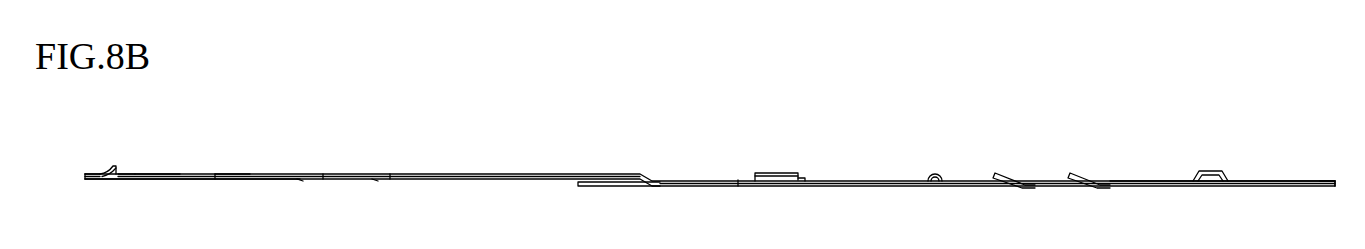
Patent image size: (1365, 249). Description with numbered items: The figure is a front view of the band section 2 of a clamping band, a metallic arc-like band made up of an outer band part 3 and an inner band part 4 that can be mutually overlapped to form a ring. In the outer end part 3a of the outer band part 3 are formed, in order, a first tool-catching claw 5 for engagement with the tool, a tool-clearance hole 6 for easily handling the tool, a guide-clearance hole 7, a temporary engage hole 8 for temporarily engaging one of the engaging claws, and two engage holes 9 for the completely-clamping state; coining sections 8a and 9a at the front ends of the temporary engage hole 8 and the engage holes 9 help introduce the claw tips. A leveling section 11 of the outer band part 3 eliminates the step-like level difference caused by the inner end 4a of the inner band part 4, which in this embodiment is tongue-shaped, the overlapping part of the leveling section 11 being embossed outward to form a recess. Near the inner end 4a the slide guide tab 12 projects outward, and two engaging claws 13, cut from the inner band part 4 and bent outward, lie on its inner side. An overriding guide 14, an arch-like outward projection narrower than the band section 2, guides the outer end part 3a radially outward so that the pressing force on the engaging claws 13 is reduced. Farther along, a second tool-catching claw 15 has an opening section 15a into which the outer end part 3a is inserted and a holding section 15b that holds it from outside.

The band section 2 is at (681, 172).
The outer band part 3 is at (196, 174).
The outer end part of the outer band part 3a is at (87, 174).
The inner band part 4 is at (1153, 181).
The inner end of the inner band part 4a is at (1335, 181).
The first tool-catching claw 5 is at (116, 166).
The tool-clearance hole 6 is at (128, 174).
The guide-clearance hole 7 is at (160, 174).
The temporary engage hole 8 is at (244, 174).
The coining section 8a is at (223, 174).
The engage holes 9 is at (387, 174).
The coining sections 9a is at (300, 180).
The leveling section 11 is at (607, 184).
The slide guide tab 12 is at (1200, 171).
The engaging claws 13 is at (996, 173).
The overriding guide 14 is at (935, 174).
The second tool-catching claw 15 is at (755, 174).
The opening section 15a is at (800, 178).
The holding section 15b is at (793, 175).